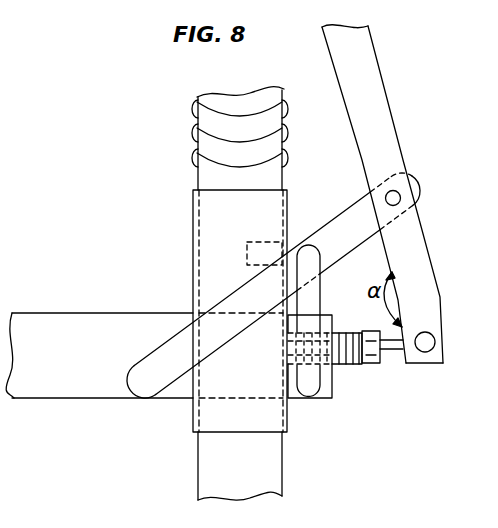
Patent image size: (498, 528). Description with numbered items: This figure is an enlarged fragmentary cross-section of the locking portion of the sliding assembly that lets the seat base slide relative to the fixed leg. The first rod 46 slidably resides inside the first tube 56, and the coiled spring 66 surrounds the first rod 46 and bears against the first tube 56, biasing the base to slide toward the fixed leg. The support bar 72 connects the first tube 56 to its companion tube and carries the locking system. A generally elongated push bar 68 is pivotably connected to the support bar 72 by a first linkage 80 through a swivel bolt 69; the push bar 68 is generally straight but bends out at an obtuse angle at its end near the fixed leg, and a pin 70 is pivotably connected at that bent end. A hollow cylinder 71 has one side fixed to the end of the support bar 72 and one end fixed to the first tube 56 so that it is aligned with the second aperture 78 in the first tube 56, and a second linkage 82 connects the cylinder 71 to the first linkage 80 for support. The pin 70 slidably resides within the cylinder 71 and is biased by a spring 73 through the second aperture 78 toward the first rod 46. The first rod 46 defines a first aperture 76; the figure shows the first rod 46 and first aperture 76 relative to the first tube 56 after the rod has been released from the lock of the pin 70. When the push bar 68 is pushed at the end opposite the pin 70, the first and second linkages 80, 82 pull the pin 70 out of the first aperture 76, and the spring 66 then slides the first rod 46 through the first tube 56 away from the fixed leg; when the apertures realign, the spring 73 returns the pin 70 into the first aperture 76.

The first rod 46 is at (197, 452).
The first tube 56 is at (193, 210).
The coiled springs 66 is at (197, 142).
The push bar 68 is at (387, 121).
The swivel bolt 69 is at (410, 190).
The pin 70 is at (394, 350).
The hollow cylinder 71 is at (360, 365).
The support bar 72 is at (82, 313).
The spring 73 is at (338, 333).
The first aperture 76 is at (262, 243).
The second aperture 78 is at (293, 367).
The first linkage 80 is at (333, 220).
The second linkage 82 is at (312, 290).